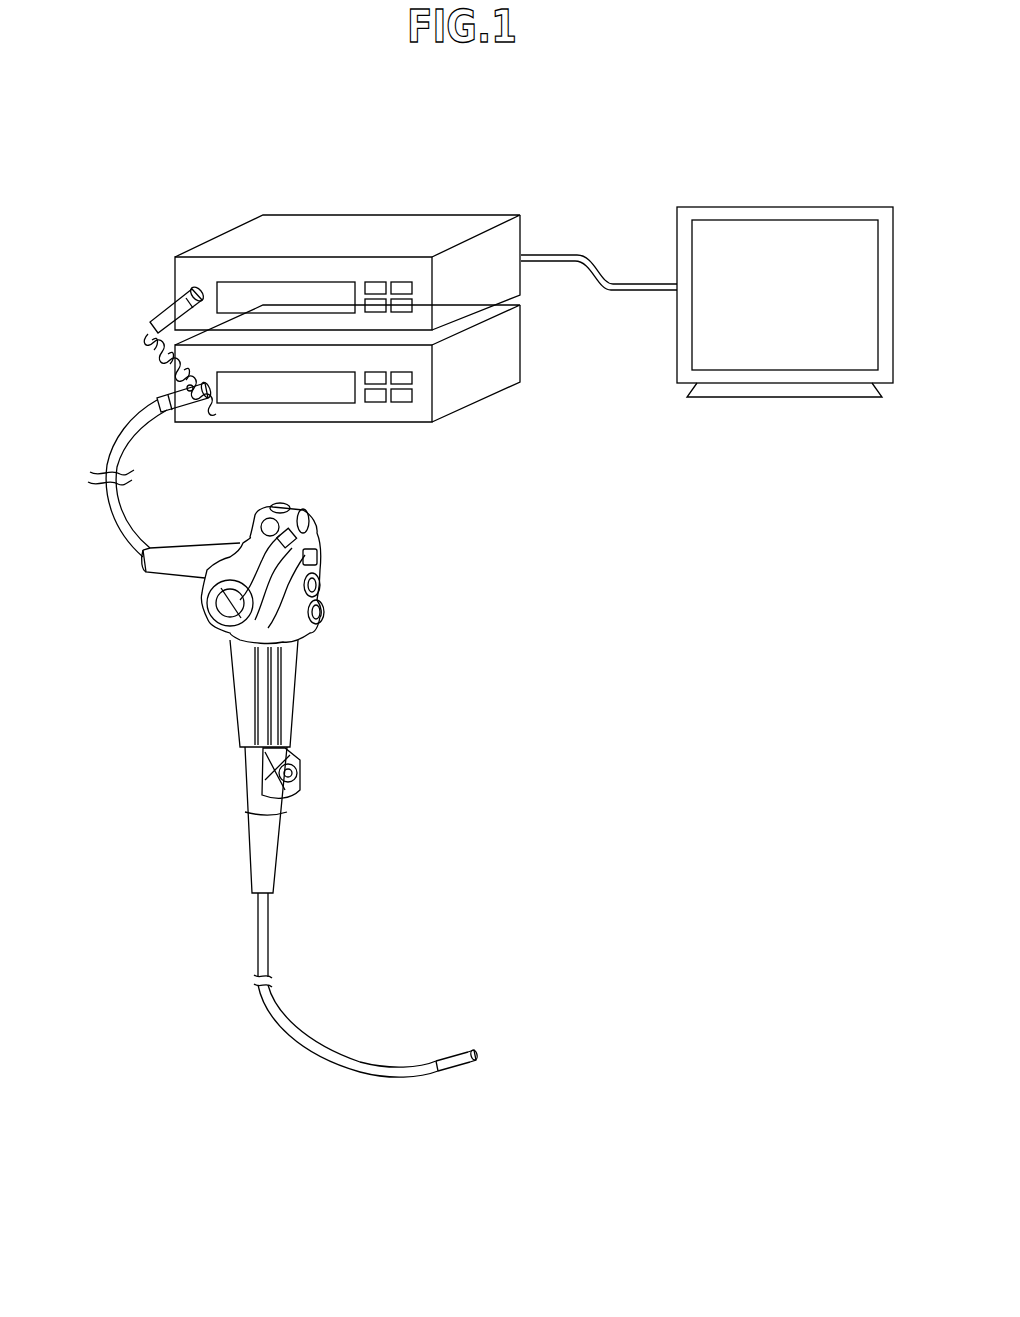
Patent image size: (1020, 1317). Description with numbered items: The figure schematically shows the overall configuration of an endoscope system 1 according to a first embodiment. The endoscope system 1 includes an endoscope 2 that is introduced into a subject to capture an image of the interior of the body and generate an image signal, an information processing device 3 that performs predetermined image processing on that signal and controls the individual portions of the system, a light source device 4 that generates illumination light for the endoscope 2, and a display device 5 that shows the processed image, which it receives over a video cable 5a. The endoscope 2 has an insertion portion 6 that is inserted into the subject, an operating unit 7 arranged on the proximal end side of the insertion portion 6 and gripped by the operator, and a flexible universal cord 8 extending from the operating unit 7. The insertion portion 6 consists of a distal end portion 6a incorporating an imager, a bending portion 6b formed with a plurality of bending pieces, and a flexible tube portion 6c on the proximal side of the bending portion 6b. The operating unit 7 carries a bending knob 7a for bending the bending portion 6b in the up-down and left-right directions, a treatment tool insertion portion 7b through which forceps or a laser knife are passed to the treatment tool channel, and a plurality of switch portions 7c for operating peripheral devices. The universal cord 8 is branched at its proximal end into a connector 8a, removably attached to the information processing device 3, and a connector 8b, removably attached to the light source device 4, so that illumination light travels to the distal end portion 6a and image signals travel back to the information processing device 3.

The endoscope system 1 is at (823, 132).
The endoscope 2 is at (415, 644).
The information processing device 3 is at (497, 217).
The light source device 4 is at (508, 346).
The display device 5 is at (785, 213).
The video cable 5a is at (578, 255).
The insertion portion 6 is at (368, 1091).
The distal end portion 6a is at (457, 1097).
The bending portion 6b is at (443, 1077).
The flexible tube portion 6c is at (312, 1052).
The operating unit 7 is at (315, 597).
The bending knob 7a is at (212, 628).
The treatment tool insertion portion 7b is at (300, 773).
The switch portions 7c is at (295, 495).
The universal cord 8 is at (107, 507).
The connector 8a is at (190, 292).
The connector 8b is at (172, 382).